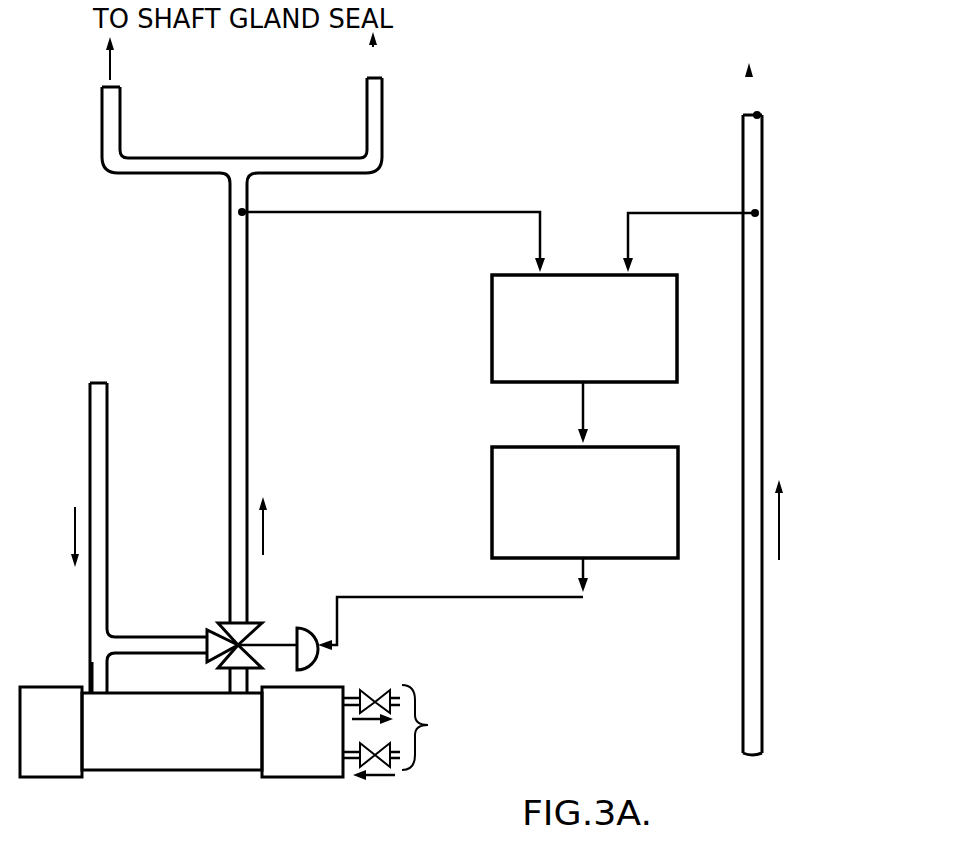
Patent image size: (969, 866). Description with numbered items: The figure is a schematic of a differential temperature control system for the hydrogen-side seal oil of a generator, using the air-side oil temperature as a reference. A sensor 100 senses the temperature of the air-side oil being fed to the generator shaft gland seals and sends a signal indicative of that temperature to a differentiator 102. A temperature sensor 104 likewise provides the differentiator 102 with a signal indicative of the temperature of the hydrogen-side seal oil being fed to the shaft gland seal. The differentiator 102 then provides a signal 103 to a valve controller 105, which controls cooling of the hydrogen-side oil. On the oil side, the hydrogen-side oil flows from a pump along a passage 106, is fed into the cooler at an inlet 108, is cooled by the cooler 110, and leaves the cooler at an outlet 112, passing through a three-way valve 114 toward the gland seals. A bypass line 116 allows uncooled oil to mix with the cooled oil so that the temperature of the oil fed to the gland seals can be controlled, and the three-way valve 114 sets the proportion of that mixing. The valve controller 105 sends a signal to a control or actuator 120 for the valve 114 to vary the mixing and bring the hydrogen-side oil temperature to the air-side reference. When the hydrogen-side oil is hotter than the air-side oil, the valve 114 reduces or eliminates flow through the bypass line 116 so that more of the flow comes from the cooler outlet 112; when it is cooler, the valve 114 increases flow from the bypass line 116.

The sensor 100 is at (745, 205).
The differentiator 102 is at (492, 305).
The signal 103 is at (583, 412).
The temperature sensor 104 is at (244, 215).
The valve controller 105 is at (492, 495).
The passage 106 is at (92, 445).
The cooler inlet 108 is at (100, 672).
The cooler 110 is at (178, 747).
The cooler outlet 112 is at (232, 680).
The three-way valve 114 is at (226, 623).
The bypass line 116 is at (157, 648).
The actuator 120 is at (298, 628).